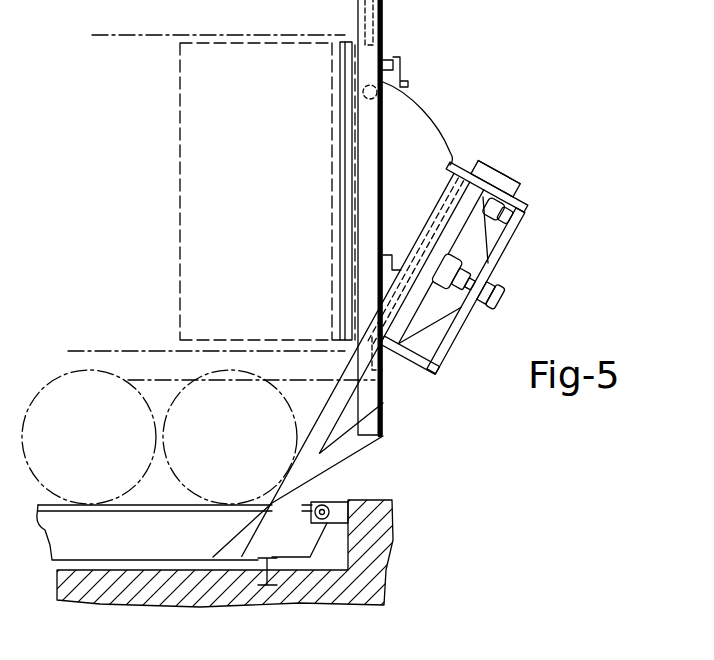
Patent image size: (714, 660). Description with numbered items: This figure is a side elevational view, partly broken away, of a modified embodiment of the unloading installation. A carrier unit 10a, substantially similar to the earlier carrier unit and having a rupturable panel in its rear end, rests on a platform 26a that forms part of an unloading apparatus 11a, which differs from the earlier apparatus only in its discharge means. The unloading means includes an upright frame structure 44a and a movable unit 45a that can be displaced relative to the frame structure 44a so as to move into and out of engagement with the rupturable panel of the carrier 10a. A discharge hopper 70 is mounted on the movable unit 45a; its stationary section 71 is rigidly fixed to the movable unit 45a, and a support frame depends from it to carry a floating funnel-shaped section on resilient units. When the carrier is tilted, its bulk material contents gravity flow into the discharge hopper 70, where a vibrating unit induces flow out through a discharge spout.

The carrier unit 10a is at (198, 30).
The unloading apparatus 11a is at (390, 104).
The platform 26a is at (158, 505).
The upright frame structure 44a is at (386, 166).
The movable unit 45a is at (332, 178).
The discharge hopper 70 is at (394, 355).
The stationary hopper section 71 is at (411, 118).